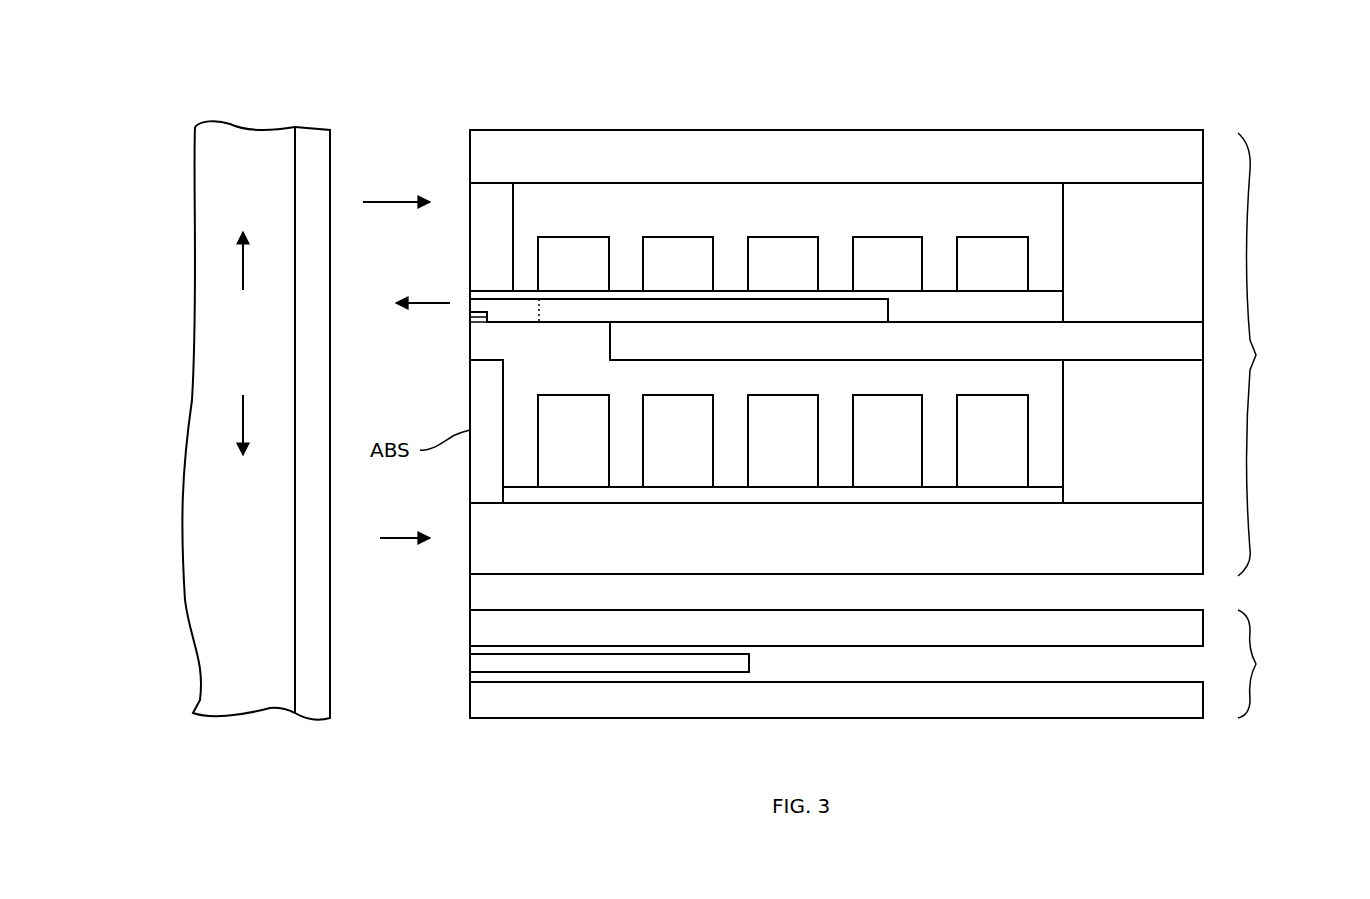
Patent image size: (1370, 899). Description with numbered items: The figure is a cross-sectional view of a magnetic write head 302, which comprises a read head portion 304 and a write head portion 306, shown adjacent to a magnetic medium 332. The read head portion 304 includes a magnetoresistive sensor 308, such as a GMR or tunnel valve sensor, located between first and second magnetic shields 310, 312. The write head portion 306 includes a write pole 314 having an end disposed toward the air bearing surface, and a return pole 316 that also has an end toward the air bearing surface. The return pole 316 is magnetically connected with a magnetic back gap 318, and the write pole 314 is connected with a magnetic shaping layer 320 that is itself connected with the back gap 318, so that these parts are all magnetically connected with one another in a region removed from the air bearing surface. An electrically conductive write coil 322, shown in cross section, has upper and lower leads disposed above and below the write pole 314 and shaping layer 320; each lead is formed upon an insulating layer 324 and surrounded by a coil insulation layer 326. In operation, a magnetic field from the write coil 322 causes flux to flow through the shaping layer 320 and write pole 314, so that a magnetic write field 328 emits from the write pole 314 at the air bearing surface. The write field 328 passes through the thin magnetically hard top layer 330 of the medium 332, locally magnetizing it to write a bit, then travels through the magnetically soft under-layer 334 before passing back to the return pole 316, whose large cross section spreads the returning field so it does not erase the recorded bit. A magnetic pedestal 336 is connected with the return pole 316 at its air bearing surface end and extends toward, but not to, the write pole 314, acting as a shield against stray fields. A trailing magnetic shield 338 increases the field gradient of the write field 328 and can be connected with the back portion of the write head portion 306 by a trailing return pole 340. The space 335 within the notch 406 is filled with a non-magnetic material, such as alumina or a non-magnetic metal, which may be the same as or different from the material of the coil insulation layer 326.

The magnetic write head 302 is at (982, 88).
The read head portion 304 is at (1253, 627).
The write head portion 306 is at (1253, 157).
The magnetoresistive sensor 308 is at (732, 665).
The first magnetic shield 310 is at (852, 699).
The second magnetic shield 312 is at (852, 627).
The write pole 314 is at (620, 318).
The return pole 316 is at (855, 535).
The magnetic back gap 318 is at (1142, 424).
The magnetic shaping layer 320 is at (949, 344).
The write coil 322 is at (600, 264).
The insulating layer 324 is at (940, 311).
The coil insulation layer 326 is at (806, 210).
The magnetic write field 328 is at (385, 200).
The magnetically hard top layer 330 is at (320, 148).
The magnetic medium 332 is at (243, 118).
The magnetically soft under-layer 334 is at (269, 332).
The space within the notch 335 is at (478, 323).
The magnetic pedestal 336 is at (470, 402).
The trailing magnetic shield 338 is at (495, 214).
The trailing return pole 340 is at (806, 158).
The notch 406 is at (478, 318).